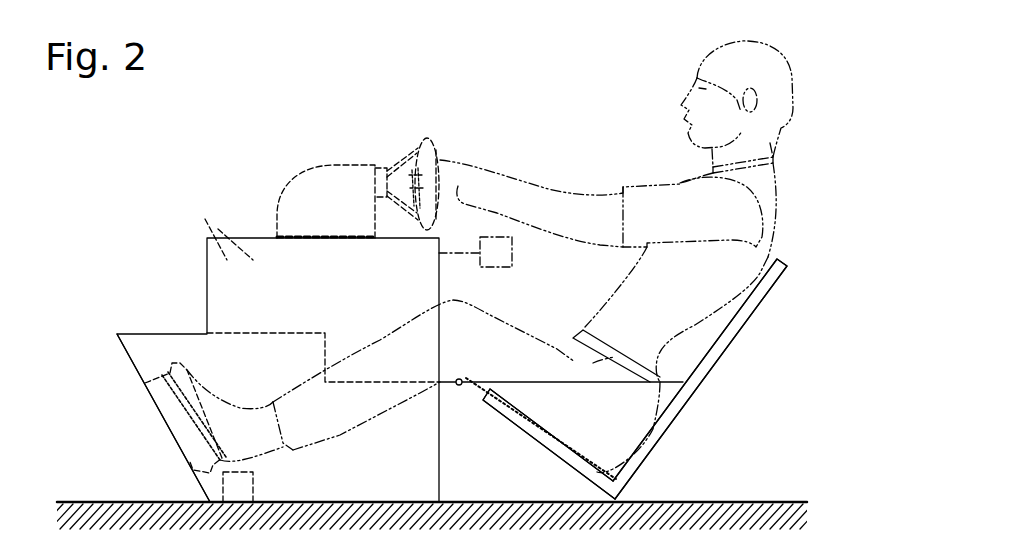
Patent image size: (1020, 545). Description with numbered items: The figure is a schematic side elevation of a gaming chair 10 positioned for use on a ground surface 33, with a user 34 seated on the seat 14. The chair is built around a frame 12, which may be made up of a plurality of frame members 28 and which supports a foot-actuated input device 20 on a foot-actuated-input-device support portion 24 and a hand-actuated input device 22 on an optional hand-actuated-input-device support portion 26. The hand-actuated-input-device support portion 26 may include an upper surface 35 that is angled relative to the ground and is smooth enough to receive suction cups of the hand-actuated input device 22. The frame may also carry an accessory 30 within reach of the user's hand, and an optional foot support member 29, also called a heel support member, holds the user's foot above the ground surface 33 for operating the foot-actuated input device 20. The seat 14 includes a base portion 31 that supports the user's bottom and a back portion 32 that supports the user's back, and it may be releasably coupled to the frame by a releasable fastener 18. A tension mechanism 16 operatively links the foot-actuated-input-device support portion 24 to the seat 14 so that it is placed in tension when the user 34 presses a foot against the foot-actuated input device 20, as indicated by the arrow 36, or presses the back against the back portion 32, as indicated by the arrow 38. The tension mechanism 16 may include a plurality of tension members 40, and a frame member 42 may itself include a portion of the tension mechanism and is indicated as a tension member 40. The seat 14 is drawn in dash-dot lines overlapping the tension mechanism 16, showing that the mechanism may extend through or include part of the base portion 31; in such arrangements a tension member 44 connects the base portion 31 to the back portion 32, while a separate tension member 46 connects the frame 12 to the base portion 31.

The gaming chair 10 is at (150, 141).
The frame 12 is at (257, 232).
The seat 14 is at (677, 357).
The tension mechanism 16 is at (311, 322).
The releasable fastener 18 is at (462, 388).
The foot-actuated input device 20 is at (213, 480).
The hand-actuated input device 22 is at (363, 163).
The foot-actuated-input-device support portion 24 is at (137, 351).
The hand-actuated-input-device support portion 26 is at (322, 237).
The frame member 28 is at (223, 229).
The foot support member 29 is at (253, 486).
The accessory 30 is at (497, 272).
The base portion 31 is at (520, 432).
The back portion 32 is at (698, 297).
The ground surface 33 is at (113, 502).
The user 34 is at (780, 207).
The upper surface 35 is at (340, 236).
The arrow 36 is at (176, 388).
The arrow 38 is at (762, 262).
The tension member 40 is at (233, 330).
The frame member 42 is at (137, 334).
The tension member 44 is at (603, 389).
The tension member 46 is at (527, 385).